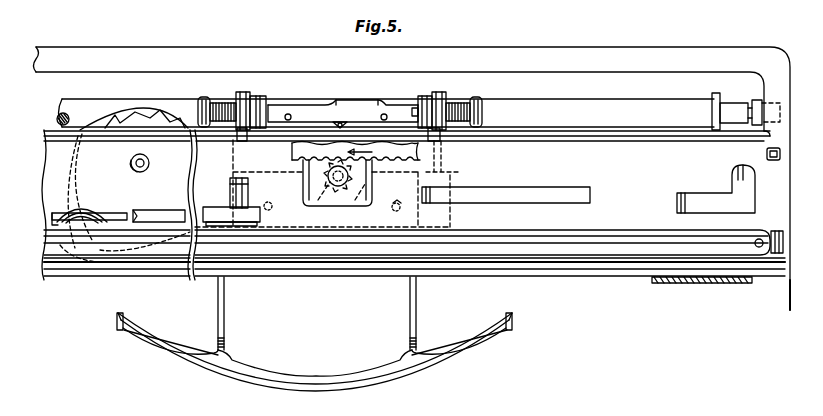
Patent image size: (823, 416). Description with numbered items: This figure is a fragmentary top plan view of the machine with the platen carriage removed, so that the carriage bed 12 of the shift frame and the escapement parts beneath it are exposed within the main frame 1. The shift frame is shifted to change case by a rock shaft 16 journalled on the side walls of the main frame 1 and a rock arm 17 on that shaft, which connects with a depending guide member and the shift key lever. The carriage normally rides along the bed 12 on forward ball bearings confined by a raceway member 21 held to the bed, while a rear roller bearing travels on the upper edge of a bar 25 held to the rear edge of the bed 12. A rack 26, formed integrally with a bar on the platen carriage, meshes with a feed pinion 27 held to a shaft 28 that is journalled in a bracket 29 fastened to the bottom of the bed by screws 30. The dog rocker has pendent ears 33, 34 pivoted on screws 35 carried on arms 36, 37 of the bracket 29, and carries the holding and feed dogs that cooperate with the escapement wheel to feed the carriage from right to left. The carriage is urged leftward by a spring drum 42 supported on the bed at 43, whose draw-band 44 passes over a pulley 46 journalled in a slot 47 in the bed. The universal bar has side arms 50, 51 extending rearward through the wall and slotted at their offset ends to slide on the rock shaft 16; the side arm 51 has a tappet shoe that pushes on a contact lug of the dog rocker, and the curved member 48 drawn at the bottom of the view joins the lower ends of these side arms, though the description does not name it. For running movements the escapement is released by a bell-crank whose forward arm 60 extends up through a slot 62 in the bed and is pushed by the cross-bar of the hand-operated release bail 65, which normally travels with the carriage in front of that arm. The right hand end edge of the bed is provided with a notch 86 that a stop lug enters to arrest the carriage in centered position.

The main frame 1 is at (106, 60).
The carriage bed 12 is at (622, 250).
The rock shaft 16 is at (72, 110).
The rock arm 17 is at (712, 111).
The raceway member 21 is at (566, 245).
The bar 25 is at (659, 138).
The rack 26 is at (292, 154).
The feed pinion 27 is at (352, 178).
The shaft 28 is at (318, 200).
The bracket 29 is at (355, 200).
The screws 30 is at (272, 206).
The pendent ear 33 is at (436, 100).
The pendent ear 34 is at (246, 100).
The screws 35 is at (218, 102).
The bracket arm 36 is at (445, 136).
The bracket arm 37 is at (240, 134).
The spring drum 42 is at (100, 138).
The spring drum support 43 is at (147, 169).
The draw-band 44 is at (112, 212).
The pulley 46 is at (84, 226).
The slot 47 is at (55, 224).
The curved handle 48 is at (312, 372).
The side arm 50 is at (382, 104).
The side arm 51 is at (284, 104).
The bell-crank arm 60 is at (236, 208).
The slot 62 is at (248, 184).
The release bail 65 is at (178, 224).
The notch 86 is at (777, 230).